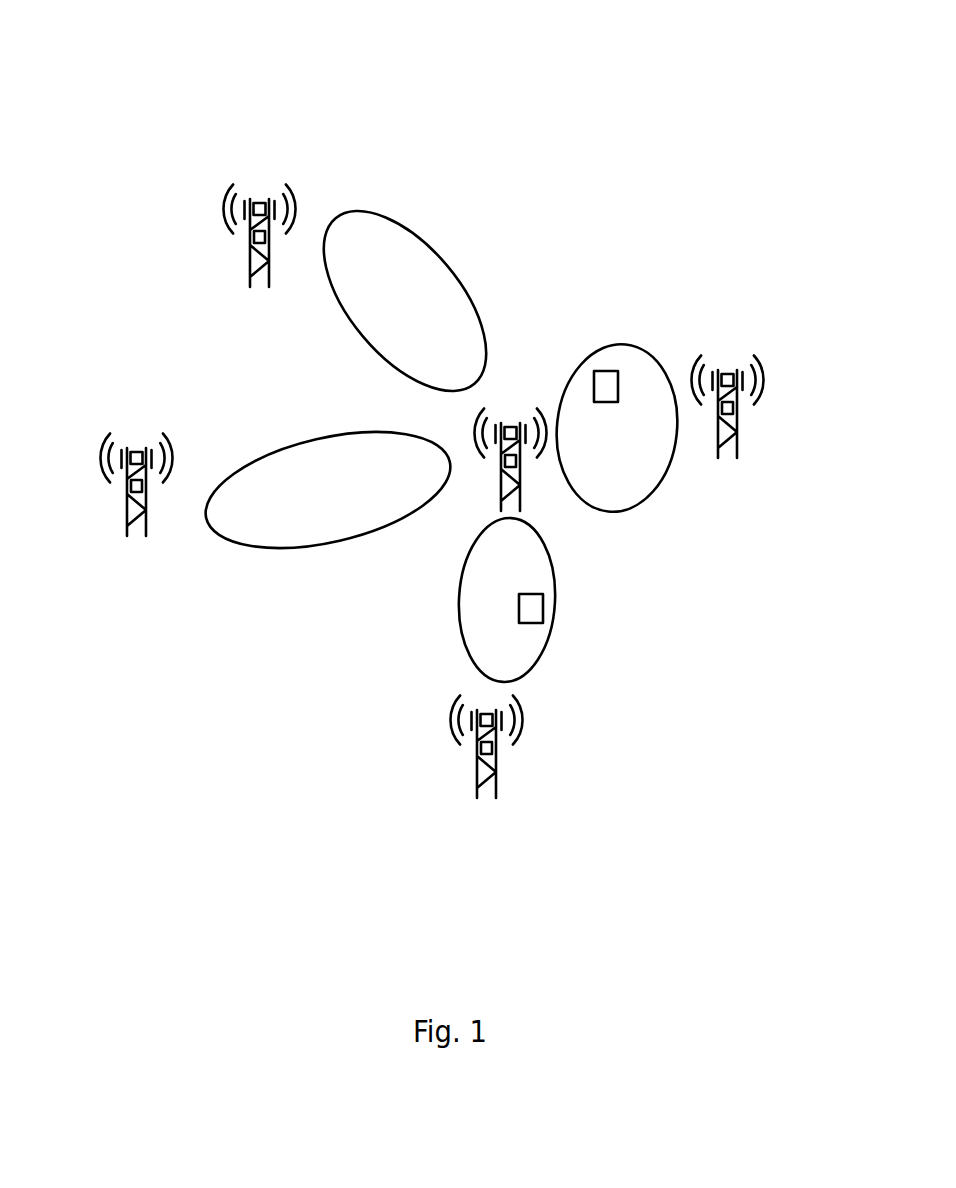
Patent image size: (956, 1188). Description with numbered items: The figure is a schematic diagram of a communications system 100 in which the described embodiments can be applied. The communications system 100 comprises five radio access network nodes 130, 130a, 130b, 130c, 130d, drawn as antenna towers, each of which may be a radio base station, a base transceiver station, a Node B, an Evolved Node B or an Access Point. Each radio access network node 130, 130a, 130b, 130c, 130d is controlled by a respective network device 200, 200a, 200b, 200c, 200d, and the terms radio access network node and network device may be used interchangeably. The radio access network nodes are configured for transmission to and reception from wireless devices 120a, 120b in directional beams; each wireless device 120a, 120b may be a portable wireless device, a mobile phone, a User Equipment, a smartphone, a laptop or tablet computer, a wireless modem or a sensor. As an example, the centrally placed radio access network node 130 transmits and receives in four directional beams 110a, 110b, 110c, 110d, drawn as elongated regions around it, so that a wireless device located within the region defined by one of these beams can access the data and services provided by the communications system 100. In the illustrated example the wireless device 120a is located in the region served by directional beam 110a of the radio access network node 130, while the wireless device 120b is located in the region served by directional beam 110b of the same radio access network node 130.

The communications system 100 is at (252, 102).
The directional beam 110a is at (658, 497).
The directional beam 110b is at (460, 603).
The directional beam 110c is at (312, 440).
The directional beam 110d is at (444, 268).
The wireless device 120a is at (600, 371).
The wireless device 120b is at (543, 605).
The radio access network node 130 is at (520, 492).
The radio access network node 130a is at (737, 444).
The radio access network node 130b is at (496, 785).
The radio access network node 130c is at (146, 522).
The radio access network node 130d is at (250, 276).
The network device 200 is at (501, 473).
The network device 200a is at (737, 406).
The network device 200b is at (496, 745).
The network device 200c is at (127, 500).
The network device 200d is at (250, 250).